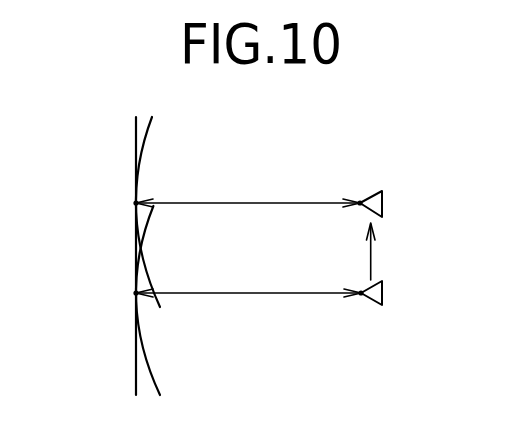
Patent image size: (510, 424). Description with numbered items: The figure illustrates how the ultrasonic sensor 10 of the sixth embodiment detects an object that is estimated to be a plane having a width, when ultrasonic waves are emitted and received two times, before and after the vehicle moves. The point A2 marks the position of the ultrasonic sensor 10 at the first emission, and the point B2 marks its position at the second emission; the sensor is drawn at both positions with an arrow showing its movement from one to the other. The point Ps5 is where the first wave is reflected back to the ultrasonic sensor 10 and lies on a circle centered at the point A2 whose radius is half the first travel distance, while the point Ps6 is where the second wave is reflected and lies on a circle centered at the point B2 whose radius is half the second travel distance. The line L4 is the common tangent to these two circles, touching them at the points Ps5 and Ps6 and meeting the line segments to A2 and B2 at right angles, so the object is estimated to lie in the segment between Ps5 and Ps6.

The ultrasonic sensor 10 is at (383, 292).
The point B2 is at (360, 203).
The point A2 is at (362, 295).
The point Ps6 is at (136, 203).
The point Ps5 is at (136, 293).
The line L4 is at (138, 248).